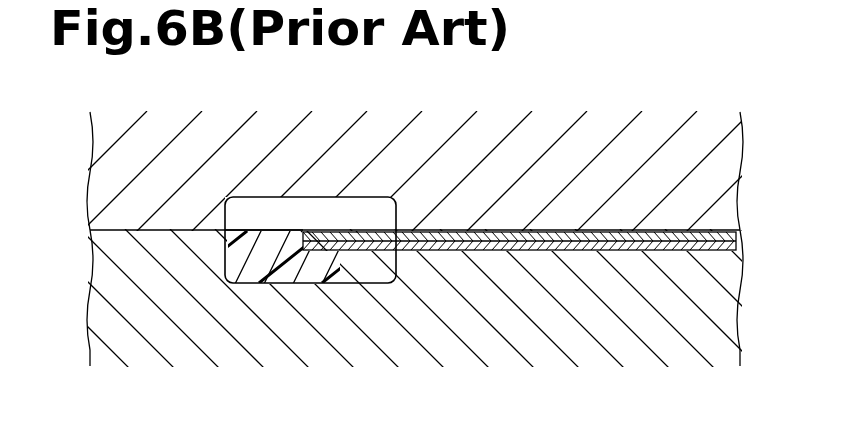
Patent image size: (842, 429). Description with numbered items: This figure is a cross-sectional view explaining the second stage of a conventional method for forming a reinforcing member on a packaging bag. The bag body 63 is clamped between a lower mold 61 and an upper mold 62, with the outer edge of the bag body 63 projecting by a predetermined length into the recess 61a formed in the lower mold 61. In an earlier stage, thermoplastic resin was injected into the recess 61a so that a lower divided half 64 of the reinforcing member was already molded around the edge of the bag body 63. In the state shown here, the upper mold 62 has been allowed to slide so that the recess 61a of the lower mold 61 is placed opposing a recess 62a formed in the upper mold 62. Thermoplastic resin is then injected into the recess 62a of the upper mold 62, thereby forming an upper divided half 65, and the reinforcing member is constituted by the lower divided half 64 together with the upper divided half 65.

The lower mold 61 is at (91, 301).
The recess 61a is at (265, 275).
The upper mold 62 is at (91, 181).
The recess 62a is at (274, 202).
The bag body 63 is at (744, 232).
The lower divided half 64 is at (353, 262).
The upper divided half 65 is at (373, 212).